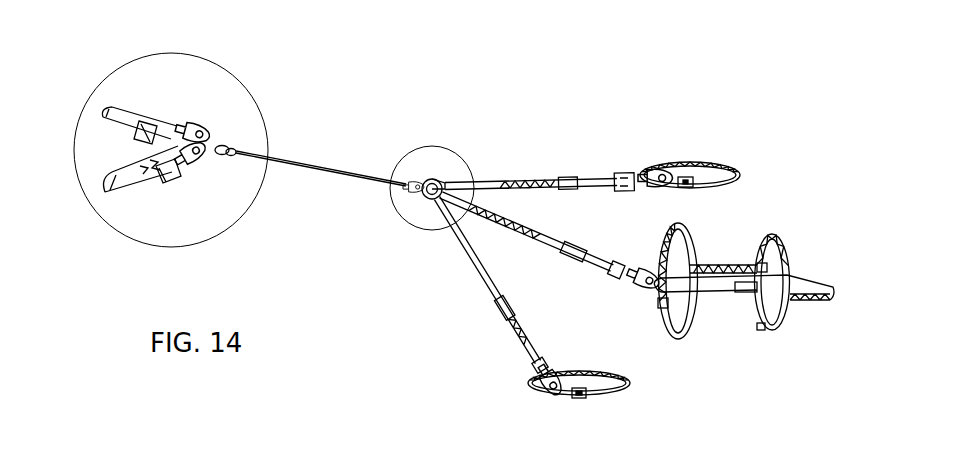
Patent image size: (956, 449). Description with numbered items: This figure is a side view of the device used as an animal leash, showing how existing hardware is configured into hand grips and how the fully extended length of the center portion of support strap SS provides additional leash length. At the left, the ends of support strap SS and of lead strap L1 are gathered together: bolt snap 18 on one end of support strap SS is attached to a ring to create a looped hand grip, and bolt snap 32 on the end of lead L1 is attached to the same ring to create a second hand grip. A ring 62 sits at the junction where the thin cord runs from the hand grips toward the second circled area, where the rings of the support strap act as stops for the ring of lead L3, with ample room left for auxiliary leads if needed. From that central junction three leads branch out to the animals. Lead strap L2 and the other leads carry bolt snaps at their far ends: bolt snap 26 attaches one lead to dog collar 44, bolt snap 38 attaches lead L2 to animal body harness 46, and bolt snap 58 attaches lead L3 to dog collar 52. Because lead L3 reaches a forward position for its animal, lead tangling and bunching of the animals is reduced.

The support strap SS is at (125, 103).
The bolt snap 18 is at (170, 140).
The bolt snap 32 is at (193, 167).
The connecting ring 62 is at (233, 152).
The lead strap L1 is at (103, 200).
The lead strap L2 is at (538, 243).
The lead strap L3 is at (477, 275).
The bolt snap 26 is at (663, 170).
The dog collar 44 is at (737, 172).
The bolt snap 38 is at (637, 283).
The animal body harness 46 is at (817, 300).
The snap hook 58 is at (533, 372).
The dog collar 52 is at (618, 393).